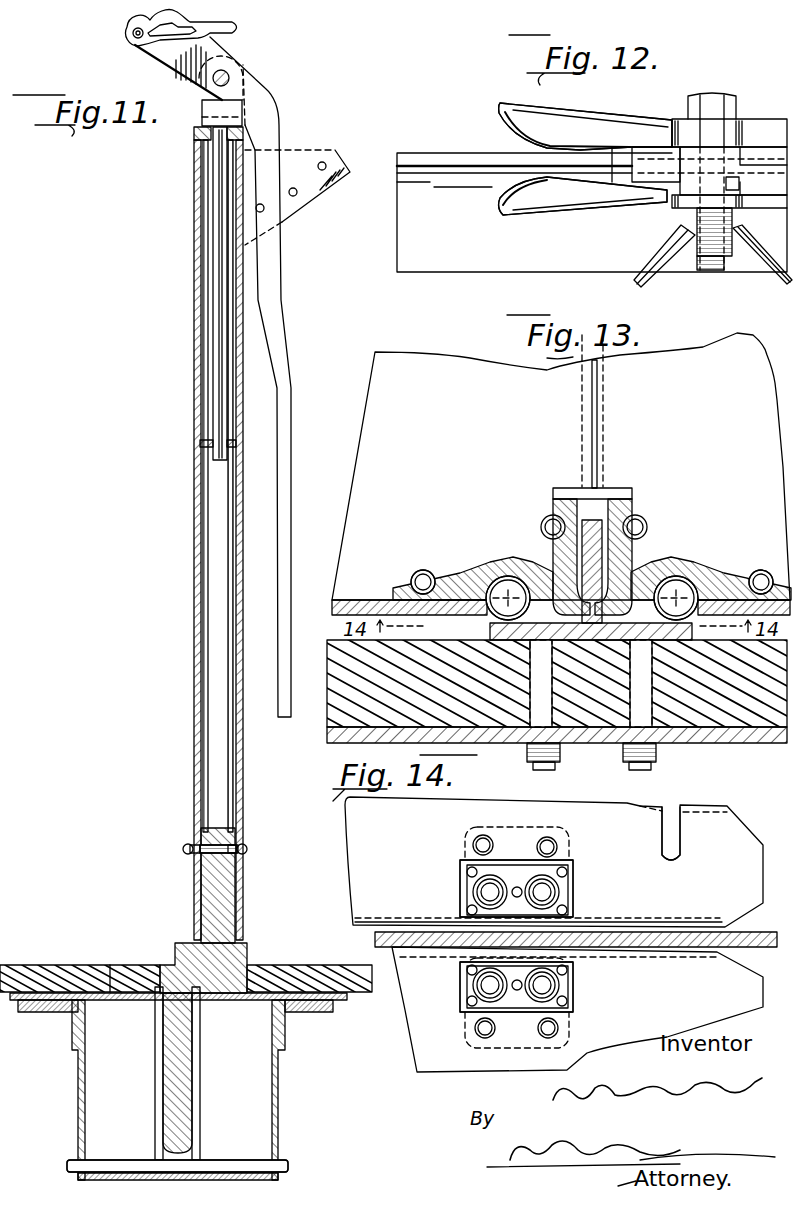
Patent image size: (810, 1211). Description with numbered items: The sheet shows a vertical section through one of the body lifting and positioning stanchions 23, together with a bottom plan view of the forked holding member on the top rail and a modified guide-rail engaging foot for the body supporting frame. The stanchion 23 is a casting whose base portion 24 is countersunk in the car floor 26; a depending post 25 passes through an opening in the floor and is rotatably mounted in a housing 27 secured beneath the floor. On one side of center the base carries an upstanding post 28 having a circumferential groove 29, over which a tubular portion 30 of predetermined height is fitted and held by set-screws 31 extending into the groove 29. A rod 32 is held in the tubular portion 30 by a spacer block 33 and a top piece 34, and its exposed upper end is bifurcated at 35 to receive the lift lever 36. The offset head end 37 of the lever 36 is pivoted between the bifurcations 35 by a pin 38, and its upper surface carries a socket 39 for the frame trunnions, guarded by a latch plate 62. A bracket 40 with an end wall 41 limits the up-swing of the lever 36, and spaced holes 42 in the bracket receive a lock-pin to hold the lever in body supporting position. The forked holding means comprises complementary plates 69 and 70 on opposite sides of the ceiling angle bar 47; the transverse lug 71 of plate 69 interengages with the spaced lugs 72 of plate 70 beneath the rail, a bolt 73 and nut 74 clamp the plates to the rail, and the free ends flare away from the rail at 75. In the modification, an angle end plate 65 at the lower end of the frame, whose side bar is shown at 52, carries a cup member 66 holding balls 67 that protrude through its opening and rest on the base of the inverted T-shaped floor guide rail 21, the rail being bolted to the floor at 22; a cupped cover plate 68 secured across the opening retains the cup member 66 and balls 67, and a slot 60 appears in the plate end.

In FIG. 13, the guide rail 21 is at (600, 500).
In FIG. 14, the guide rail 21 is at (378, 934).
In FIG. 13, the bolts 22 is at (628, 760).
In FIG. 11, the stanchion 23 is at (193, 681).
In FIG. 11, the base portion 24 is at (248, 958).
In FIG. 11, the depending post 25 is at (167, 1107).
In FIG. 11, the car floor 26 is at (33, 968).
In FIG. 13, the car floor 26 is at (333, 697).
In FIG. 11, the housing 27 is at (78, 1093).
In FIG. 11, the upstanding post 28 is at (210, 888).
In FIG. 11, the circumferential groove 29 is at (220, 852).
In FIG. 11, the tubular portion 30 is at (203, 395).
In FIG. 11, the set-screws 31 is at (186, 846).
In FIG. 11, the rod 32 is at (213, 340).
In FIG. 11, the spacer block 33 is at (200, 443).
In FIG. 11, the top piece 34 is at (199, 131).
In FIG. 11, the bifurcations 35 is at (205, 104).
In FIG. 11, the lift lever 36 is at (288, 348).
In FIG. 11, the head end 37 is at (165, 64).
In FIG. 11, the pin 38 is at (229, 78).
In FIG. 11, the socket 39 is at (143, 46).
In FIG. 11, the bracket 40 is at (316, 198).
In FIG. 11, the end wall 41 is at (343, 160).
In FIG. 11, the spaced holes 42 is at (294, 188).
In FIG. 12, the angle bar 47 is at (437, 162).
In FIG. 13, the side bars 52 is at (435, 365).
In FIG. 14, the slot 60 is at (681, 857).
In FIG. 11, the latch plate 62 is at (150, 15).
In FIG. 13, the angle end plate 65 is at (362, 602).
In FIG. 14, the angle end plate 65 is at (351, 872).
In FIG. 13, the cup member 66 is at (455, 596).
In FIG. 14, the cup member 66 is at (463, 893).
In FIG. 13, the balls 67 is at (490, 587).
In FIG. 14, the balls 67 is at (463, 878).
In FIG. 13, the cover plate 68 is at (498, 563).
In FIG. 14, the cover plate 68 is at (467, 837).
In FIG. 12, the plate 69 is at (660, 198).
In FIG. 12, the plate 70 is at (747, 133).
In FIG. 12, the lug 71 is at (729, 183).
In FIG. 12, the spaced lugs 72 is at (643, 163).
In FIG. 12, the bolt 73 is at (698, 260).
In FIG. 12, the nut 74 is at (697, 243).
In FIG. 12, the flared end 75 is at (498, 108).